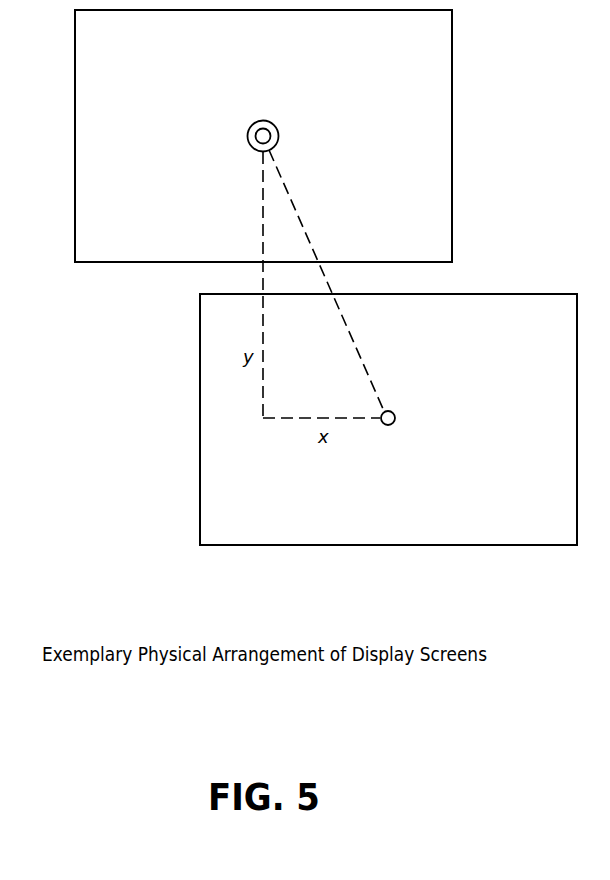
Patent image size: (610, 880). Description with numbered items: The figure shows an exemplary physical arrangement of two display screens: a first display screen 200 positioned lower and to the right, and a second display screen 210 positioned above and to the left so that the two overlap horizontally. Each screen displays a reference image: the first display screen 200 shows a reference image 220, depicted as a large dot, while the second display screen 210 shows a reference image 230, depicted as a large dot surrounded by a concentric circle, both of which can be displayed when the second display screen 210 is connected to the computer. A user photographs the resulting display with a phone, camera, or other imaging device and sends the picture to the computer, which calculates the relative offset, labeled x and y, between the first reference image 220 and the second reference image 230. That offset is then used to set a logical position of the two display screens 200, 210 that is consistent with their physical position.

The second display screen 210 is at (263, 136).
The first display screen 200 is at (388, 419).
The reference image 230 is at (290, 139).
The reference image 220 is at (419, 425).